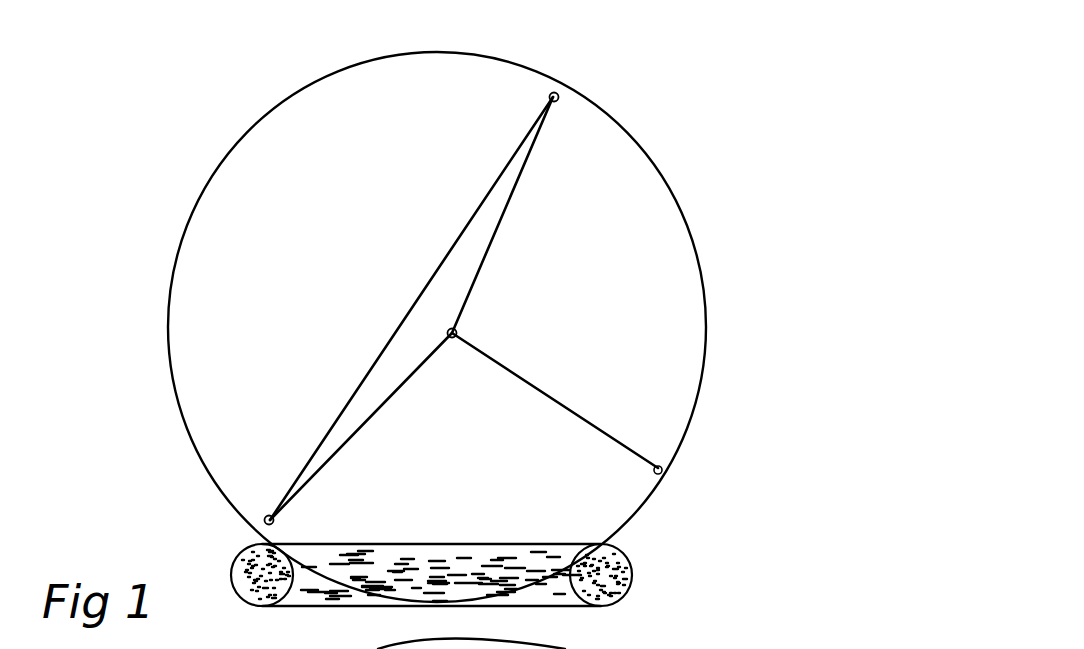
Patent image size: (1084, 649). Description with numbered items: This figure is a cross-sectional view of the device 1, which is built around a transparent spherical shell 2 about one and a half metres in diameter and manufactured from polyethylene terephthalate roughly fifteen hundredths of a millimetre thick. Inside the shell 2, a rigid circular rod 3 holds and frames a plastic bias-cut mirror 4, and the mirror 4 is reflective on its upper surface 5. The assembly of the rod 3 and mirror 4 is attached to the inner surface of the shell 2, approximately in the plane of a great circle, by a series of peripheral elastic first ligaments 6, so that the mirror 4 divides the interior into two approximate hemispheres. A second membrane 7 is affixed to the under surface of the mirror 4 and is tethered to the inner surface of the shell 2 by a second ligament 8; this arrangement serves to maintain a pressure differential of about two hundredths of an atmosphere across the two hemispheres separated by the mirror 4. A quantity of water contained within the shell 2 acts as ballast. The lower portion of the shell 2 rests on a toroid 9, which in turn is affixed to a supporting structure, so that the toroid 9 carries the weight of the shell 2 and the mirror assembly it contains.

The device 1 is at (137, 123).
The transparent spherical shell 2 is at (167, 337).
The rigid circular rod 3 is at (559, 96).
The plastic bias-cut mirror 4 is at (463, 232).
The upper surface 5 is at (450, 252).
The peripheral elastic first ligaments 6 is at (452, 333).
The second membrane 7 is at (467, 295).
The second ligament 8 is at (522, 377).
The toroid 9 is at (606, 582).